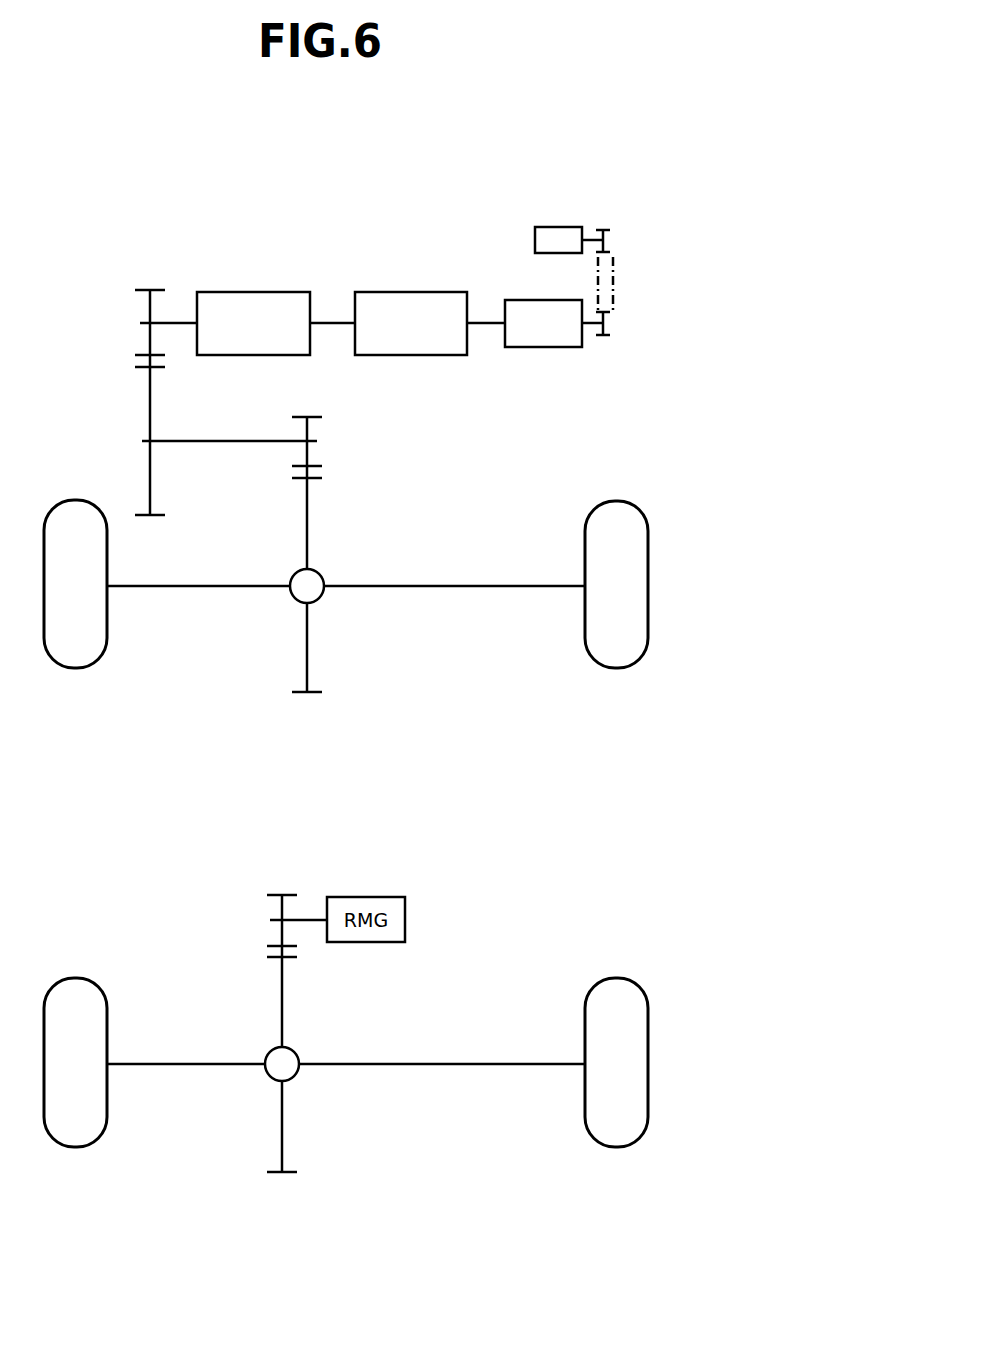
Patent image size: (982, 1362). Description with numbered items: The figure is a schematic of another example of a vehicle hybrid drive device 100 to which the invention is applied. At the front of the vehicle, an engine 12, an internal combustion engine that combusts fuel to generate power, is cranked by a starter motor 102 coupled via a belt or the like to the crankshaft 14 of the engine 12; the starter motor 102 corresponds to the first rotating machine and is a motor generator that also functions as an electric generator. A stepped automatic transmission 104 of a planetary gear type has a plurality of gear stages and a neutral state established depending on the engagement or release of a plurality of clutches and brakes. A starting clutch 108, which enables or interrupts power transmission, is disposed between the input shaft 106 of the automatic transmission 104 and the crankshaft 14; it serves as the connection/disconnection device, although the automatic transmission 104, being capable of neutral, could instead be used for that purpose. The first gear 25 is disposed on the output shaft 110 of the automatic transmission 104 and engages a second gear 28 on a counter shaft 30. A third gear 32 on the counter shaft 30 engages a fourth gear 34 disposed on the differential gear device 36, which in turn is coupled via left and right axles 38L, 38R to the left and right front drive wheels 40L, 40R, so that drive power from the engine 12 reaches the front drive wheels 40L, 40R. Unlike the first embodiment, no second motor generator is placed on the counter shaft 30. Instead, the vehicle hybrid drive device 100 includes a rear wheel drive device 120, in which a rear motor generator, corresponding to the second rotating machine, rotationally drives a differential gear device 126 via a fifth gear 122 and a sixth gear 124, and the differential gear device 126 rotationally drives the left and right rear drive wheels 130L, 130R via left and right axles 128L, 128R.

The vehicle hybrid drive device 100 is at (148, 169).
The engine 12 is at (545, 349).
The crankshaft 14 is at (481, 318).
The starter motor 102 is at (562, 233).
The stepped automatic transmission 104 is at (256, 298).
The input shaft 106 is at (331, 317).
The starting clutch 108 is at (410, 298).
The output shaft 110 is at (177, 318).
The first gear 25 is at (145, 288).
The second gear 28 is at (152, 517).
The counter shaft 30 is at (225, 443).
The third gear 32 is at (308, 415).
The fourth gear 34 is at (310, 694).
The differential gear device 36 is at (299, 581).
The left axle 38L is at (200, 588).
The right axle 38R is at (457, 588).
The left front drive wheel 40L is at (80, 652).
The right front drive wheel 40R is at (618, 652).
The rear wheel drive device 120 is at (511, 912).
The fifth gear 122 is at (282, 893).
The sixth gear 124 is at (285, 1174).
The differential gear device 126 is at (275, 1061).
The left axle 128L is at (175, 1066).
The right axle 128R is at (435, 1066).
The left rear drive wheel 130L is at (80, 1132).
The right rear drive wheel 130R is at (618, 1132).